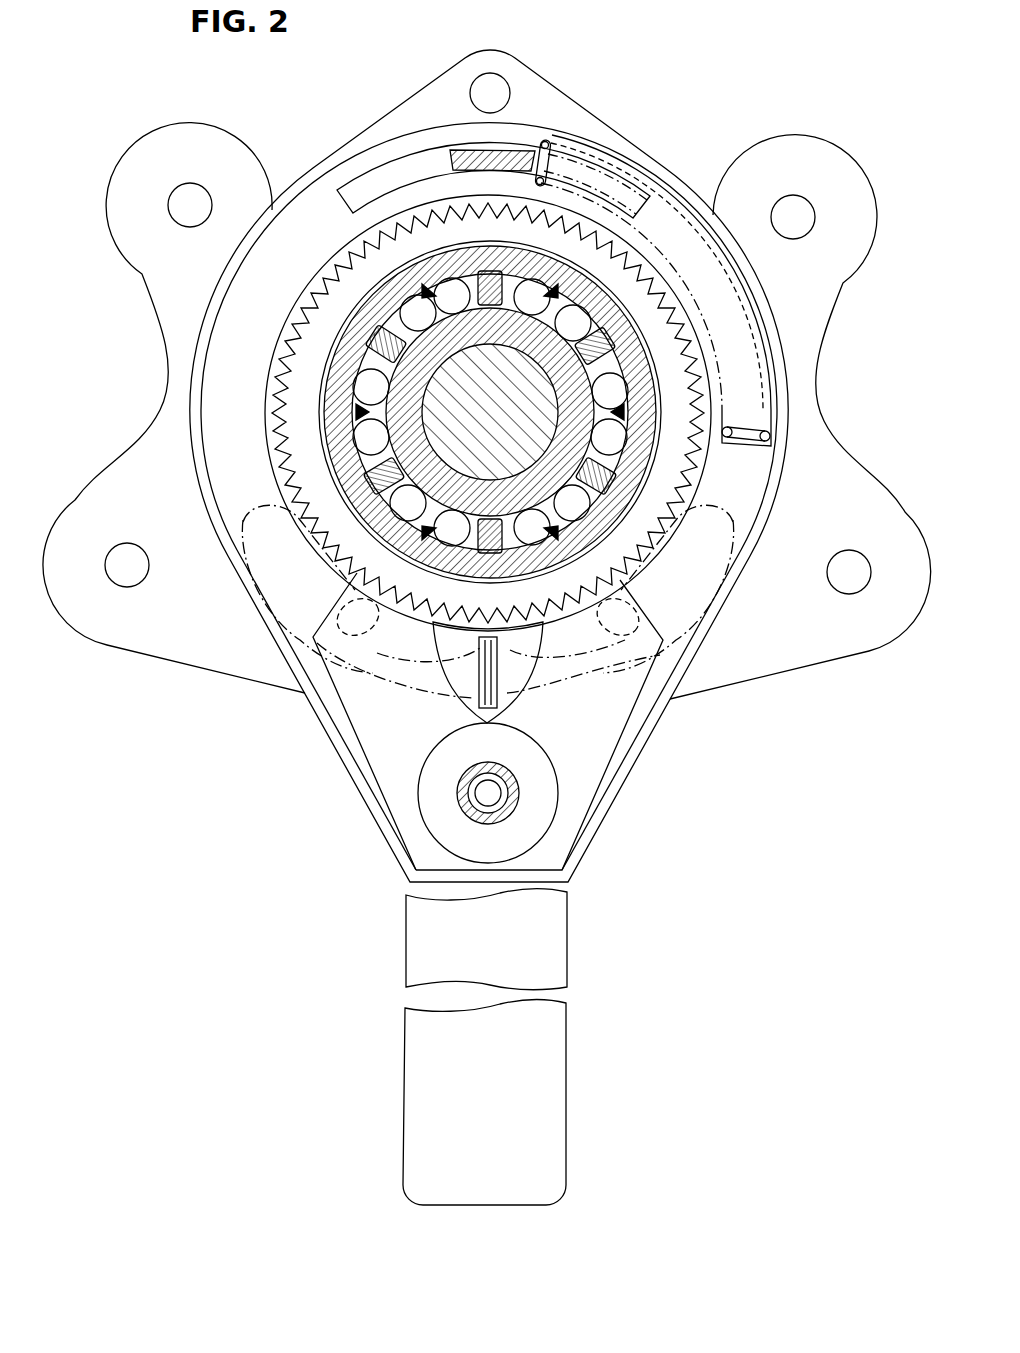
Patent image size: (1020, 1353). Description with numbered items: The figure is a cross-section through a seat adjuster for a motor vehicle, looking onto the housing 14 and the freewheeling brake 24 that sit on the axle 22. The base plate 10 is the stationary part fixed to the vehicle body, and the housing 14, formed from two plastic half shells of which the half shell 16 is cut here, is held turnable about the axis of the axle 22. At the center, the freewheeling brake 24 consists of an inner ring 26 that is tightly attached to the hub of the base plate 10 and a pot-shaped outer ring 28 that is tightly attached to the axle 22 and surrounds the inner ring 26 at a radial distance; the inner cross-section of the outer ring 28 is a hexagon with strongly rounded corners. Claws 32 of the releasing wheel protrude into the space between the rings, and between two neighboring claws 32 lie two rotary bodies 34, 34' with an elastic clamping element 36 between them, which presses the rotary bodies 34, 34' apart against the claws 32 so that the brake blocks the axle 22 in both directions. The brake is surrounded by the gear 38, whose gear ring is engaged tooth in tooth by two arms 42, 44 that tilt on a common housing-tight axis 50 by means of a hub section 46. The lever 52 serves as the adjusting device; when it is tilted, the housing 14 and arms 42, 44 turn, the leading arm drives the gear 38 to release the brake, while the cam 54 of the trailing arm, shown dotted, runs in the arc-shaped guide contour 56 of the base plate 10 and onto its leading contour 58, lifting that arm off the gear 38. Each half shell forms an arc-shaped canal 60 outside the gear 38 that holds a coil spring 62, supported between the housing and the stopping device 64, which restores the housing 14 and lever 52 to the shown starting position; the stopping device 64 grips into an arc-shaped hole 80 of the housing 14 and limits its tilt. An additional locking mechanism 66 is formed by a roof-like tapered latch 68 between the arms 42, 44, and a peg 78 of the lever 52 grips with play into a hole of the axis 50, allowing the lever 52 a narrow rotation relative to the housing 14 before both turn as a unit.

The base plate 10 is at (850, 476).
The housing 14 is at (345, 787).
The half shell 16 is at (615, 790).
The axle 22 is at (632, 548).
The freewheeling brake 24 is at (337, 328).
The inner ring 26 is at (600, 420).
The outer ring 28 is at (620, 508).
The claw 32 is at (336, 322).
The rotary body 34 is at (423, 412).
The rotary body 34' is at (301, 437).
The clamping element 36 is at (354, 414).
The gear 38 is at (322, 545).
The arm 42 is at (357, 723).
The arm 44 is at (617, 715).
The hub section 46 is at (440, 840).
The axis 50 is at (515, 812).
The lever 52 is at (560, 1042).
The cam 54 is at (650, 632).
The guide contour 56 is at (712, 596).
The leading contour 58 is at (565, 665).
The canal 60 is at (722, 290).
The coil spring 62 is at (547, 140).
The stopping device 64 is at (472, 143).
The additional locking mechanism 66 is at (470, 665).
The latch 68 is at (478, 700).
The peg 78 is at (462, 783).
The arc-shaped hole 80 is at (617, 192).